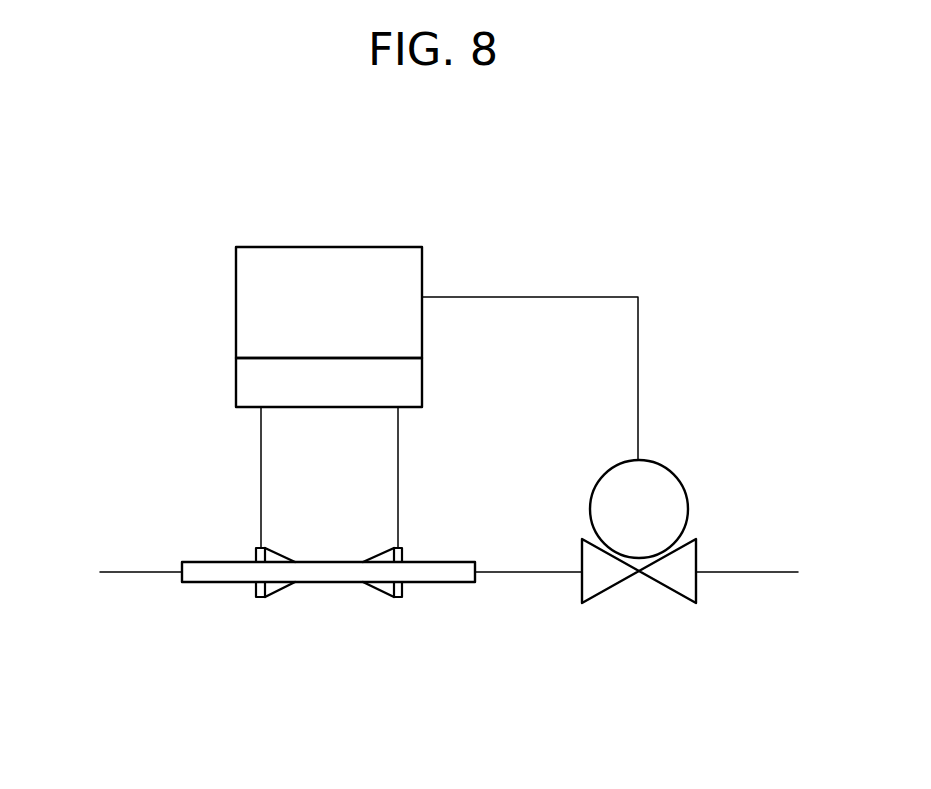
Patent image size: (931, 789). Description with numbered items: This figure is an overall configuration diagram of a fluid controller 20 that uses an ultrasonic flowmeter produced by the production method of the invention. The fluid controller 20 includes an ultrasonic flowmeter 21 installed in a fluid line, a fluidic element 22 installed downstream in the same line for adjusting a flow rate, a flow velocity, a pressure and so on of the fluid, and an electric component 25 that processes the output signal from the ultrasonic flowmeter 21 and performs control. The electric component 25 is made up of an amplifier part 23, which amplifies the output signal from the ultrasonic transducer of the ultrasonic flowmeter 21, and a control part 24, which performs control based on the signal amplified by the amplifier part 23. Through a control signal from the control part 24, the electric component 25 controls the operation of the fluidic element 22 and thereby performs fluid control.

The fluid controller 20 is at (587, 248).
The ultrasonic flowmeter 21 is at (327, 574).
The fluidic element 22 is at (607, 578).
The amplifier part 23 is at (255, 380).
The control part 24 is at (255, 298).
The electric component 25 is at (247, 327).